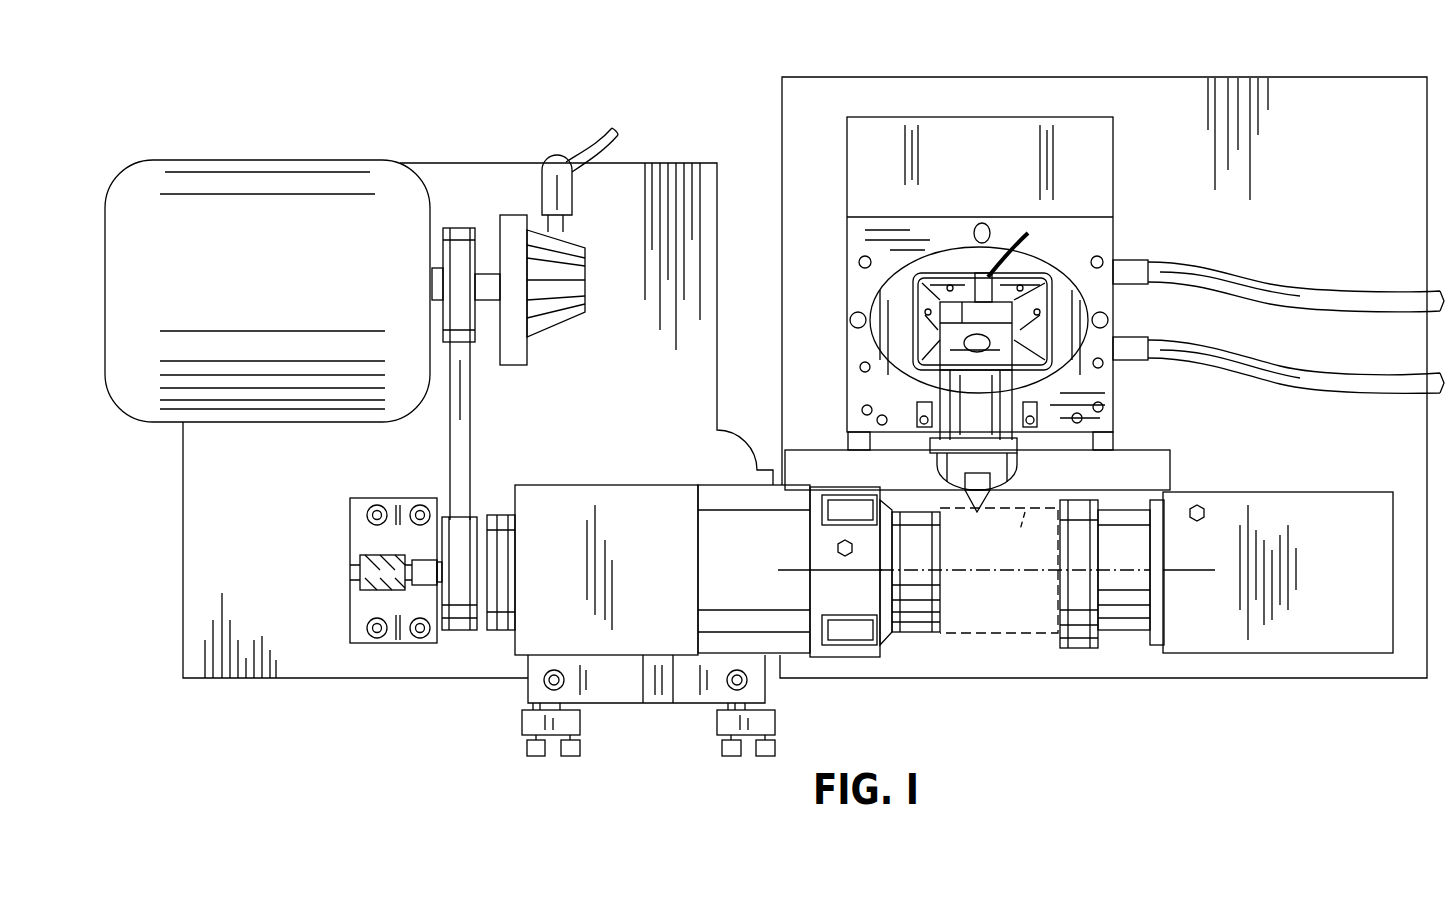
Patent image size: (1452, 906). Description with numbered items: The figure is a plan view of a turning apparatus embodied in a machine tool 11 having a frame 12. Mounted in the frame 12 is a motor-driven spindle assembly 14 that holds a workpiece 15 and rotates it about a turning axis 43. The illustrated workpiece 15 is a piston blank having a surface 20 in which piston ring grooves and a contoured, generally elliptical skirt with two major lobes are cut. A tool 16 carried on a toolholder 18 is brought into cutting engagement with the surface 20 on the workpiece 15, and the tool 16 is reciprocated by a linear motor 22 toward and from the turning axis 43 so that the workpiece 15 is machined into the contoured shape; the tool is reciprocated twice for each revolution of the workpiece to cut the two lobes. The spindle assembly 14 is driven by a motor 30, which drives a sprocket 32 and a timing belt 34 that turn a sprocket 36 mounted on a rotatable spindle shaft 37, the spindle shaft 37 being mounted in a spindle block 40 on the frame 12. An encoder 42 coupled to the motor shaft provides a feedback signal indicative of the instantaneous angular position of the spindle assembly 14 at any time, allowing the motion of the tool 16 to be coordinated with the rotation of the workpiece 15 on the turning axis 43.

The machine tool 11 is at (1078, 68).
The frame 12 is at (1296, 88).
The spindle assembly 14 is at (896, 660).
The workpiece 15 is at (1012, 645).
The tool 16 is at (968, 503).
The toolholder 18 is at (948, 390).
The surface 20 is at (1025, 512).
The linear motor 22 is at (1100, 237).
The motor 30 is at (278, 276).
The sprocket 32 is at (478, 228).
The timing belt 34 is at (468, 410).
The sprocket 36 is at (478, 520).
The spindle shaft 37 is at (486, 560).
The spindle block 40 is at (640, 498).
The encoder 42 is at (550, 338).
The turning axis 43 is at (990, 572).